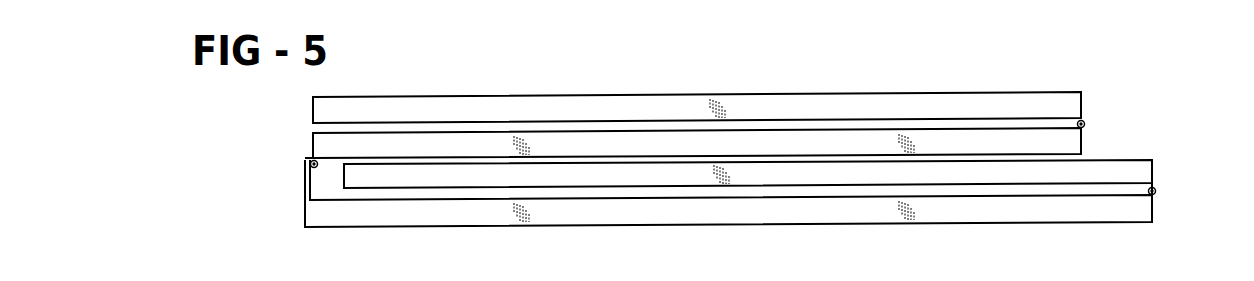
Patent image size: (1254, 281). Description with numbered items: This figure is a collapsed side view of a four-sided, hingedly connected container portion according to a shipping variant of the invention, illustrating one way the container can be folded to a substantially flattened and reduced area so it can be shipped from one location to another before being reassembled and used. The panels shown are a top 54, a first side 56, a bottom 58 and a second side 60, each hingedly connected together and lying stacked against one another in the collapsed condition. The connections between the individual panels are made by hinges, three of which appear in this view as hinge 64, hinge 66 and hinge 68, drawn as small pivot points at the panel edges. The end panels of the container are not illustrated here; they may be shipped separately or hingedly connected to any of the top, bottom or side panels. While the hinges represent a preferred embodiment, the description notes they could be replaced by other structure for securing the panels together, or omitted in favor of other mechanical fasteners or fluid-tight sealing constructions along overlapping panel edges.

The top 54 is at (643, 94).
The first side 56 is at (326, 145).
The bottom 58 is at (488, 228).
The second side 60 is at (1121, 160).
The hinge 64 is at (1085, 124).
The hinge 66 is at (310, 164).
The hinge 68 is at (1156, 191).